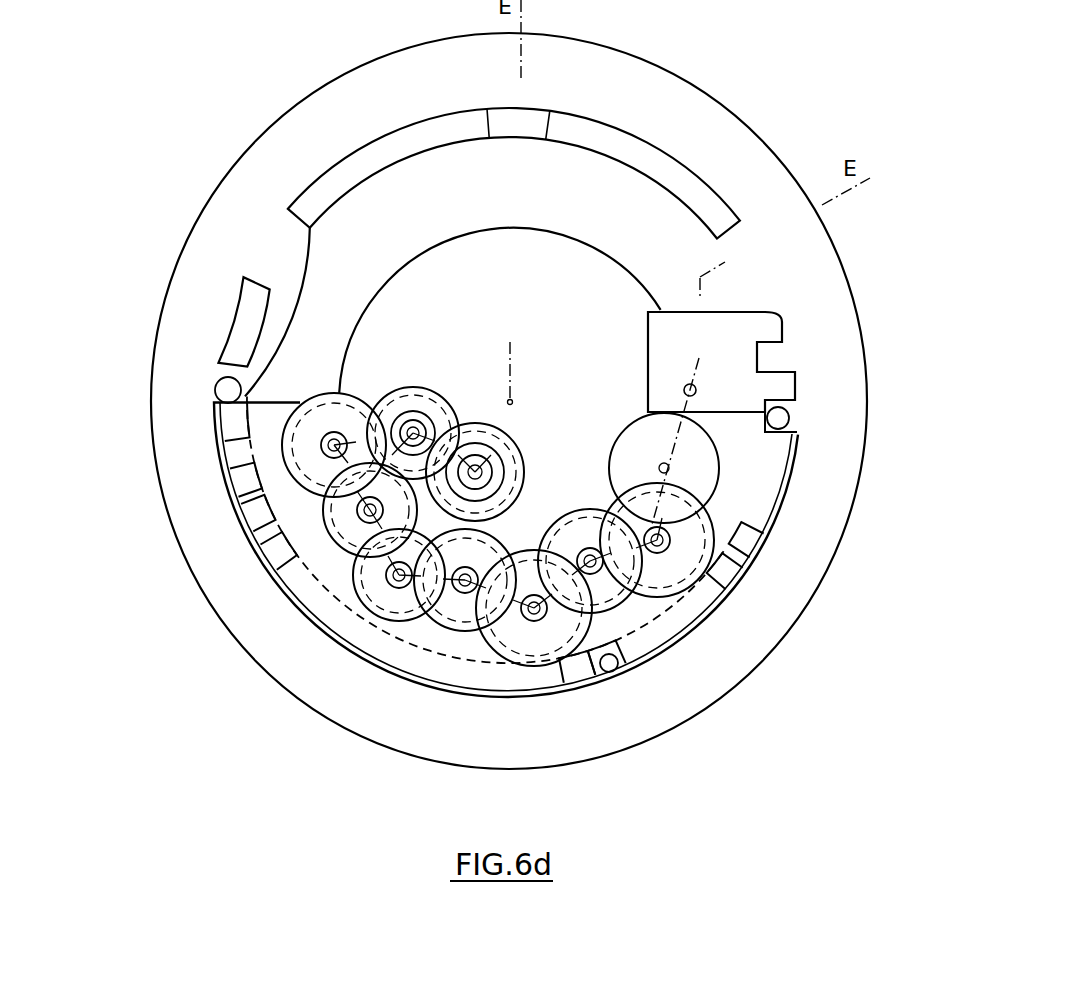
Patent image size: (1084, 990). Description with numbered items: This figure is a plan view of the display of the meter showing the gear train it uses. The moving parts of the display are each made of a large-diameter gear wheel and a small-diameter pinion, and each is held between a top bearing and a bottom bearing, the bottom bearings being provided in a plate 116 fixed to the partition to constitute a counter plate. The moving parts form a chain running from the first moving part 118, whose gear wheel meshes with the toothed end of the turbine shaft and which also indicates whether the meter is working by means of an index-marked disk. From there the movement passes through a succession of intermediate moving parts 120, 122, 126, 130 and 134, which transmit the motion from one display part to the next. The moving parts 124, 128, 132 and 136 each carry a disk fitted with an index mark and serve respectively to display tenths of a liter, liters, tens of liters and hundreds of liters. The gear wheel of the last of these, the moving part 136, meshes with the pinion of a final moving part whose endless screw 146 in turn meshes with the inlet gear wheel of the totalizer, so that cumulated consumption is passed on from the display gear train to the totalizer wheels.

The plate 116 is at (725, 352).
The first moving part 118 is at (504, 449).
The intermediate moving part 120 is at (423, 392).
The intermediate moving part 122 is at (285, 446).
The moving part 124 is at (324, 514).
The intermediate moving part 126 is at (362, 594).
The moving part 128 is at (490, 640).
The intermediate moving part 130 is at (593, 652).
The moving part 132 is at (622, 590).
The intermediate moving part 134 is at (710, 552).
The moving part 136 is at (719, 476).
The endless screw 146 is at (698, 388).